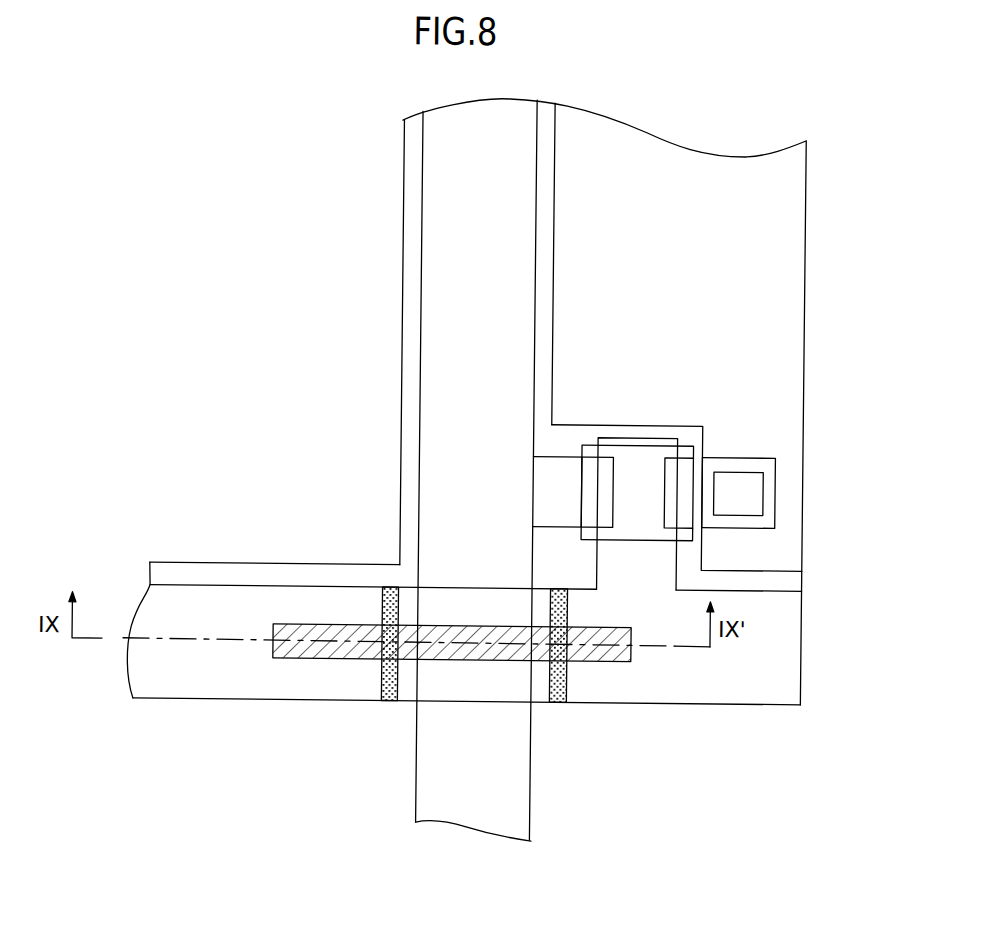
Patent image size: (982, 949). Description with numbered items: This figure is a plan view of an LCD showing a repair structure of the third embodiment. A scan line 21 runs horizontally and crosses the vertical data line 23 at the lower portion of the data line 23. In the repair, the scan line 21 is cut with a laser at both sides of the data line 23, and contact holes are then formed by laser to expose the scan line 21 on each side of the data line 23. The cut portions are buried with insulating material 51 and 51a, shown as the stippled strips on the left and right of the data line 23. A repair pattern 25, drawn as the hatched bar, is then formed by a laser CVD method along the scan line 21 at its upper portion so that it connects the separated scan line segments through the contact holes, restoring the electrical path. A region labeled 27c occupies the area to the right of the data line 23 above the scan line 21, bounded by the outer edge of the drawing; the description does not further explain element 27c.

The data line 23 is at (438, 280).
The pixel electrode 27c is at (791, 350).
The scan line 21 is at (786, 645).
The insulating material 51 is at (378, 687).
The insulating material 51a is at (564, 682).
The repair pattern 25 is at (478, 655).